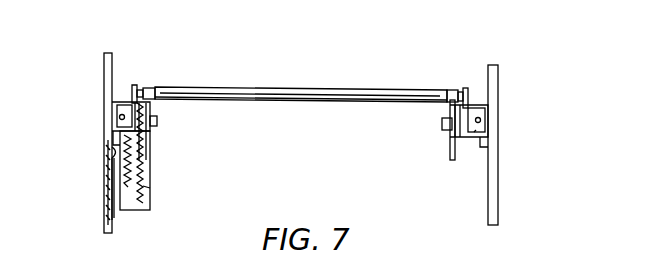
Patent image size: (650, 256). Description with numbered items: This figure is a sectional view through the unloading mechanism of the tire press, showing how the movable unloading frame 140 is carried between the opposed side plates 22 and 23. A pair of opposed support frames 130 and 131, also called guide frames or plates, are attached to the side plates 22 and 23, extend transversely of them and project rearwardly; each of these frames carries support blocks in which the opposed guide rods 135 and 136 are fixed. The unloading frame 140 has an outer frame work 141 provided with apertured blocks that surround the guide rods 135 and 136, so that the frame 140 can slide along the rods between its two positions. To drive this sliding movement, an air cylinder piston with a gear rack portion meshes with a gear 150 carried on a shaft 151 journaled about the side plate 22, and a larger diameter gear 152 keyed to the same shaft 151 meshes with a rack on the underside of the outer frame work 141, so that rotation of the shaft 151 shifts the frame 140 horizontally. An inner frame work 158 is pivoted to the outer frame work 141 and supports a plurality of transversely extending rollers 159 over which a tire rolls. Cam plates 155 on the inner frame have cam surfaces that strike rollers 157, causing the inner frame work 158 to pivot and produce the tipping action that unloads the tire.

The side plate 22 is at (104, 56).
The side plate 23 is at (498, 72).
The support frame 130 is at (490, 146).
The support frame 131 is at (118, 157).
The guide rod 135 is at (118, 123).
The guide rod 136 is at (481, 120).
The unloading frame 140 is at (113, 104).
The outer frame work 141 is at (472, 92).
The gear 150 is at (122, 212).
The shaft 151 is at (150, 172).
The gear 152 is at (150, 188).
The cam plate 155 is at (147, 147).
The roller 157 is at (157, 120).
The inner frame work 158 is at (143, 83).
The roller 159 is at (260, 86).